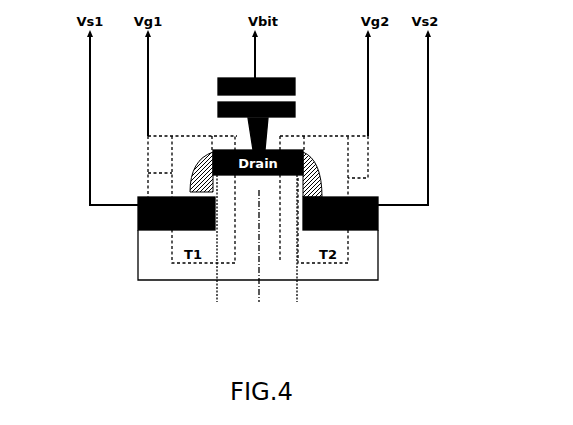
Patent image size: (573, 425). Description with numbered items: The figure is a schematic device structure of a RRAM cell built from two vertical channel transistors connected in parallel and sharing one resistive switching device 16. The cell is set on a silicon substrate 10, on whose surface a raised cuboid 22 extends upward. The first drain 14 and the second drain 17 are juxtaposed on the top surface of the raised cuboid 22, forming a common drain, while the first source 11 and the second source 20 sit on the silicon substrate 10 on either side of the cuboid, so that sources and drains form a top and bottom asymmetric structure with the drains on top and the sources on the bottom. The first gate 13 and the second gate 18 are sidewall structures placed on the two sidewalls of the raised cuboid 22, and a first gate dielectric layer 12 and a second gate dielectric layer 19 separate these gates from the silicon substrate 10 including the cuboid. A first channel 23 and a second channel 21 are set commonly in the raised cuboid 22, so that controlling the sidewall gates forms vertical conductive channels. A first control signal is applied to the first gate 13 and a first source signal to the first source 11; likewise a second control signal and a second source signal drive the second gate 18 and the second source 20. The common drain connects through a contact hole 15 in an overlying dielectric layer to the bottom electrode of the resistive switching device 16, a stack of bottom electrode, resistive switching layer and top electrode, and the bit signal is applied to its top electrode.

The silicon substrate 10 is at (150, 264).
The first source 11 is at (136, 222).
The first gate dielectric layer 12 is at (180, 192).
The first gate 13 is at (203, 190).
The first drain 14 is at (211, 160).
The contact hole 15 is at (245, 128).
The resistive switching device 16 is at (255, 85).
The second drain 17 is at (303, 147).
The second gate 18 is at (316, 174).
The second gate dielectric layer 19 is at (322, 196).
The second source 20 is at (378, 222).
The second channel 21 is at (298, 255).
The raised cuboid 22 is at (258, 262).
The first channel 23 is at (217, 255).